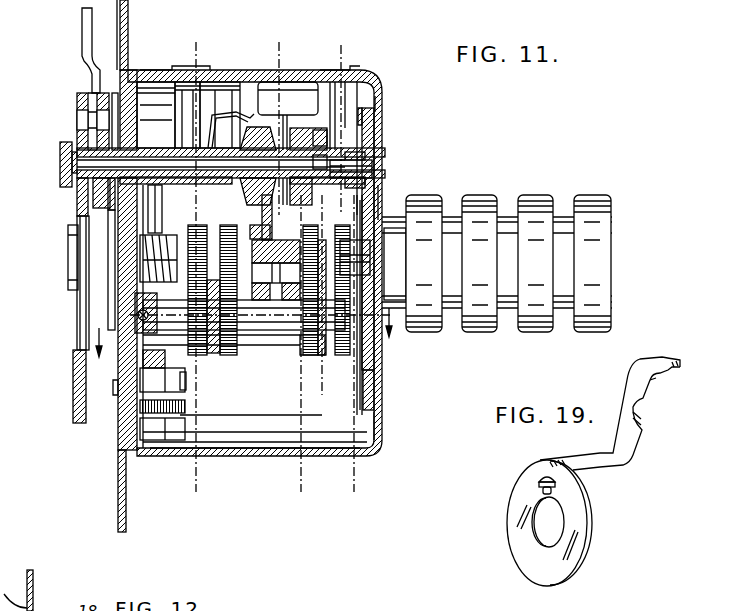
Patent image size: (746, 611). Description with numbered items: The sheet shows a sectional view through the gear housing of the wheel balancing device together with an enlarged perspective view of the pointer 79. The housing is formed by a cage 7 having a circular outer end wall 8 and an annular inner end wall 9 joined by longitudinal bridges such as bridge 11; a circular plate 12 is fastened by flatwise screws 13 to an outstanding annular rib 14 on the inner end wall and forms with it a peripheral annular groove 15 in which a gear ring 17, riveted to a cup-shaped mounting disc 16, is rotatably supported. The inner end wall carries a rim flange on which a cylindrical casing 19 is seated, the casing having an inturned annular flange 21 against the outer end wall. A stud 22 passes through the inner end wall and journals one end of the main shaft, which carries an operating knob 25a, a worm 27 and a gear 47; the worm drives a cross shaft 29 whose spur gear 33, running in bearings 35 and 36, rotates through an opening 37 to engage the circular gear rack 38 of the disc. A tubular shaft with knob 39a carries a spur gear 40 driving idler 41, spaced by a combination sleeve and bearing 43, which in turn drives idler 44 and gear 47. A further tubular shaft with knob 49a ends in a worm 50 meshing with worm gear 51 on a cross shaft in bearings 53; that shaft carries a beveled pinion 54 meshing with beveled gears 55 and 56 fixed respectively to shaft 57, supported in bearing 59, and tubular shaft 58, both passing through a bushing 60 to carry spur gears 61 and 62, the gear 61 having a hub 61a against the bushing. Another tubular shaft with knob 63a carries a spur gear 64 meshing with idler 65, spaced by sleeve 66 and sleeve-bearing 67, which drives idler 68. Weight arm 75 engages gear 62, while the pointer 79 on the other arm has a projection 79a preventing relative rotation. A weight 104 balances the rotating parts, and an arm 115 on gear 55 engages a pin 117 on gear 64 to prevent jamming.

In FIG. 11, the cage 7 is at (387, 72).
In FIG. 11, the circular outer end wall 8 is at (382, 196).
In FIG. 11, the annular inner end wall 9 is at (156, 80).
In FIG. 11, the longitudinal bridge 11 is at (358, 272).
In FIG. 11, the circular plate 12 is at (100, 418).
In FIG. 11, the flatwise screws 13 is at (342, 47).
In FIG. 11, the outstanding annular rib 14 is at (82, 20).
In FIG. 11, the peripheral annular groove 15 is at (197, 45).
In FIG. 11, the cup-shaped mounting disc 16 is at (130, 28).
In FIG. 11, the gear ring 17 is at (117, 44).
In FIG. 11, the cylindrical casing 19 is at (250, 458).
In FIG. 11, the inturned annular flange 21 is at (385, 400).
In FIG. 11, the stud 22 is at (68, 256).
In FIG. 11, the operating knob 25a is at (598, 195).
In FIG. 11, the worm 27 is at (150, 240).
In FIG. 11, the cross shaft 29 is at (162, 380).
In FIG. 11, the spur gear 33 is at (187, 406).
In FIG. 11, the bearing 35 is at (187, 388).
In FIG. 11, the bearing 36 is at (187, 423).
In FIG. 11, the opening 37 is at (116, 412).
In FIG. 11, the circular gear rack 38 is at (112, 100).
In FIG. 11, the operating knob 39a is at (540, 195).
In FIG. 11, the spur gear 40 is at (258, 304).
In FIG. 11, the spur gear idler 41 is at (296, 340).
In FIG. 11, the combination sleeve and bearing 43 is at (135, 306).
In FIG. 11, the spur gear idler 44 is at (200, 355).
In FIG. 11, the gear 47 is at (222, 290).
In FIG. 11, the operating knob 49a is at (482, 195).
In FIG. 11, the worm 50 is at (268, 300).
In FIG. 11, the worm gear 51 is at (230, 216).
In FIG. 11, the bearings 53 is at (257, 224).
In FIG. 11, the beveled pinion 54 is at (296, 127).
In FIG. 11, the beveled gear 55 is at (328, 133).
In FIG. 11, the beveled gear 56 is at (268, 126).
In FIG. 11, the shaft 57 is at (368, 160).
In FIG. 11, the tubular shaft 58 is at (180, 147).
In FIG. 11, the bearing 59 is at (380, 128).
In FIG. 11, the bushing 60 is at (140, 144).
In FIG. 11, the spur gear 61 is at (86, 140).
In FIG. 11, the hub 61a is at (108, 130).
In FIG. 11, the spur gear 62 is at (62, 184).
In FIG. 11, the operating knob 63a is at (428, 195).
In FIG. 11, the spur gear 64 is at (352, 256).
In FIG. 11, the spur gear idler 65 is at (354, 360).
In FIG. 11, the sleeve 66 is at (308, 356).
In FIG. 11, the combination sleeve and bearing 67 is at (376, 362).
In FIG. 11, the spur gear idler 68 is at (300, 362).
In FIG. 11, the weight arm 75 is at (72, 390).
In FIG. 11, the pointer 79 is at (228, 115).
In FIG. 19, the pointer 79 is at (660, 357).
In FIG. 19, the projection 79a is at (537, 472).
In FIG. 11, the weight 104 is at (291, 88).
In FIG. 11, the arm 115 is at (384, 102).
In FIG. 11, the pin 117 is at (382, 175).